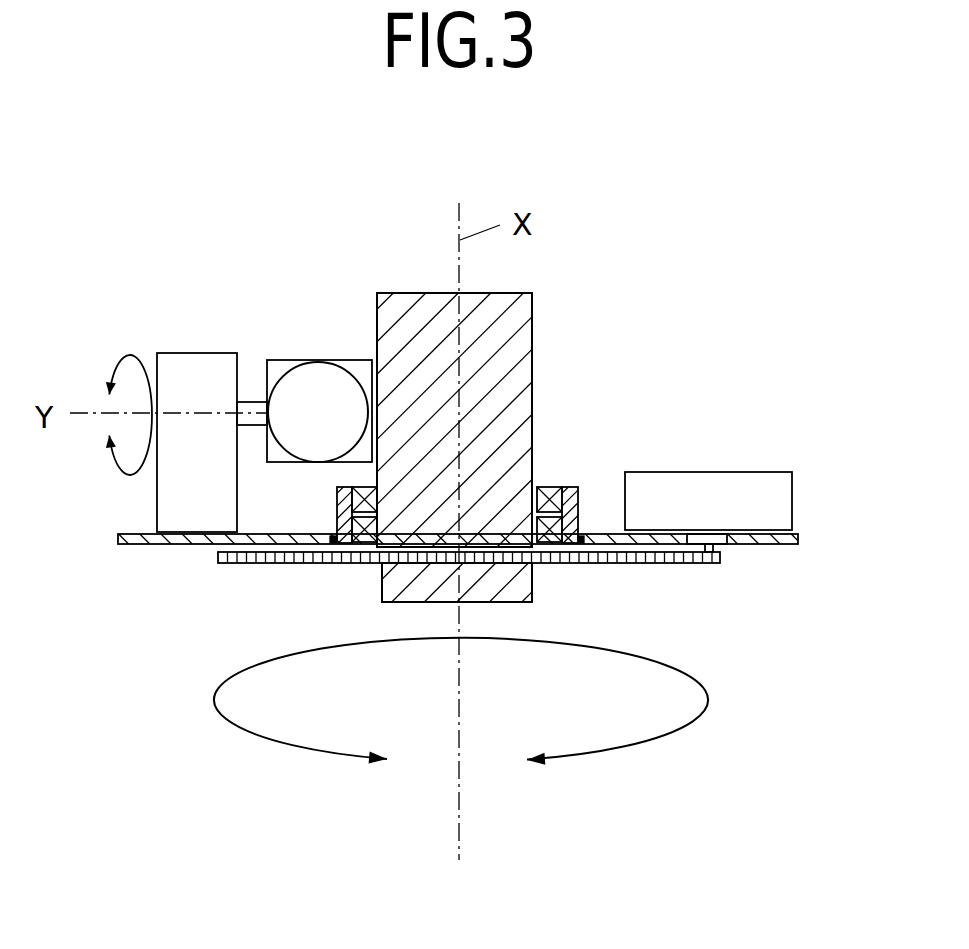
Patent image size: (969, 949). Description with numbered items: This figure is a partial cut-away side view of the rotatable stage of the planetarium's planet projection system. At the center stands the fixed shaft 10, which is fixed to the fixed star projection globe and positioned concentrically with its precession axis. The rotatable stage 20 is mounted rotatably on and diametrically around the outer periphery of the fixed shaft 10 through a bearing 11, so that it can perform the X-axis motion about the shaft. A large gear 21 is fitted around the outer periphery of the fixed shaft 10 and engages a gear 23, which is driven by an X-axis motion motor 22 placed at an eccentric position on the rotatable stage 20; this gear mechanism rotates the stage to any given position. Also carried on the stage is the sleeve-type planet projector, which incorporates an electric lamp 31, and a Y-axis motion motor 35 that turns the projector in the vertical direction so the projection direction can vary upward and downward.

The fixed shaft 10 is at (527, 323).
The bearing 11 is at (552, 482).
The rotatable stage 20 is at (127, 545).
The large gear 21 is at (643, 565).
The X-axis motion motor 22 is at (775, 472).
The gear 23 is at (723, 562).
The electric lamp 31 is at (300, 380).
The Y-axis motion motor 35 is at (180, 352).